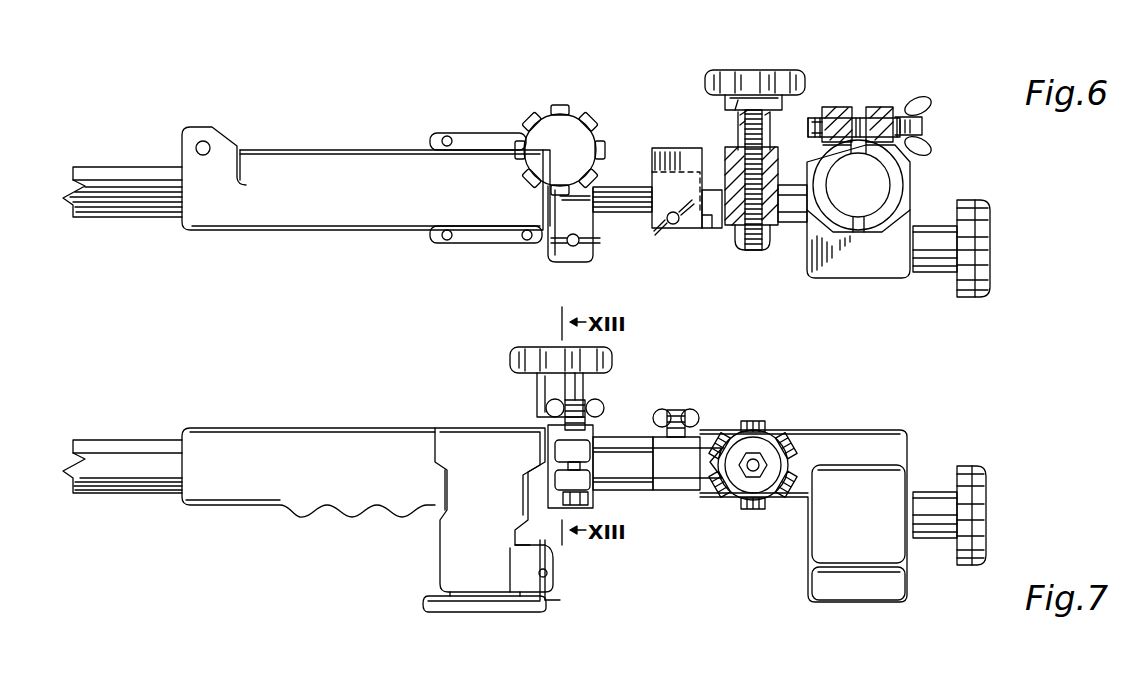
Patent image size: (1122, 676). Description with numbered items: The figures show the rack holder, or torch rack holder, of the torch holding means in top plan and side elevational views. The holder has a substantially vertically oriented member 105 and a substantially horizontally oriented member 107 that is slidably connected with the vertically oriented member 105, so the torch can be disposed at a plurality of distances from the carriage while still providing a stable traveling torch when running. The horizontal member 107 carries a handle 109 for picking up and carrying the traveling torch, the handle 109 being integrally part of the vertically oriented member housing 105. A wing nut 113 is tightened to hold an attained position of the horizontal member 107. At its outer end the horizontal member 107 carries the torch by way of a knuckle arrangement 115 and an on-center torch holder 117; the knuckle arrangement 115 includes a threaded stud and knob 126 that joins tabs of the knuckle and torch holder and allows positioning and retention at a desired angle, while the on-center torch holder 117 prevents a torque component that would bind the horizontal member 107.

In FIG. 6, the vertically oriented member 105 is at (464, 190).
In FIG. 7, the vertically oriented member 105 is at (465, 556).
In FIG. 6, the horizontally oriented member 107 is at (122, 175).
In FIG. 7, the horizontally oriented member 107 is at (120, 447).
In FIG. 6, the handle 109 is at (330, 172).
In FIG. 7, the handle 109 is at (300, 462).
In FIG. 6, the wing nut 113 is at (573, 232).
In FIG. 7, the wing nut 113 is at (598, 412).
In FIG. 6, the knuckle arrangement 115 is at (731, 232).
In FIG. 7, the knuckle arrangement 115 is at (685, 445).
In FIG. 6, the on-center torch holder 117 is at (863, 283).
In FIG. 7, the on-center torch holder 117 is at (840, 527).
In FIG. 6, the threaded stud and knob 126 is at (750, 70).
In FIG. 7, the threaded stud and knob 126 is at (752, 430).